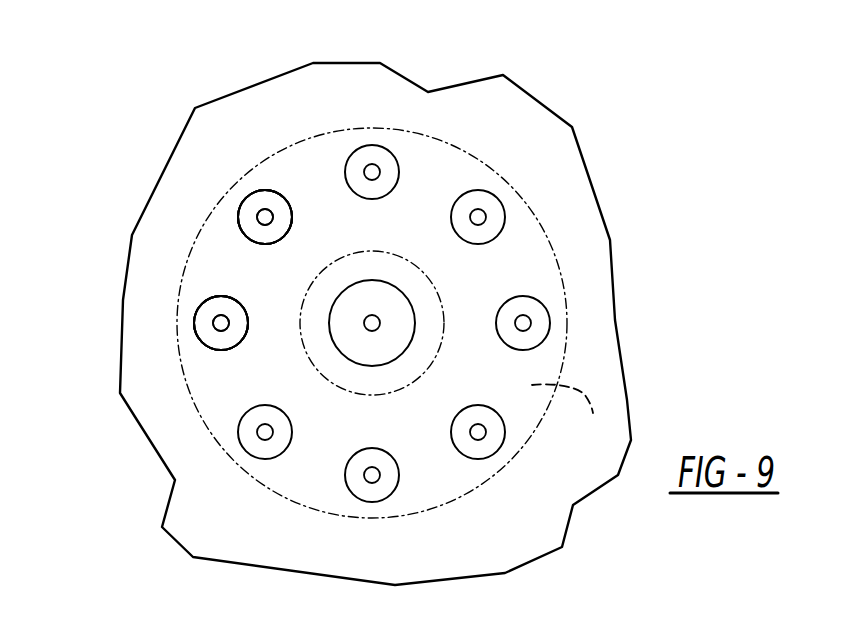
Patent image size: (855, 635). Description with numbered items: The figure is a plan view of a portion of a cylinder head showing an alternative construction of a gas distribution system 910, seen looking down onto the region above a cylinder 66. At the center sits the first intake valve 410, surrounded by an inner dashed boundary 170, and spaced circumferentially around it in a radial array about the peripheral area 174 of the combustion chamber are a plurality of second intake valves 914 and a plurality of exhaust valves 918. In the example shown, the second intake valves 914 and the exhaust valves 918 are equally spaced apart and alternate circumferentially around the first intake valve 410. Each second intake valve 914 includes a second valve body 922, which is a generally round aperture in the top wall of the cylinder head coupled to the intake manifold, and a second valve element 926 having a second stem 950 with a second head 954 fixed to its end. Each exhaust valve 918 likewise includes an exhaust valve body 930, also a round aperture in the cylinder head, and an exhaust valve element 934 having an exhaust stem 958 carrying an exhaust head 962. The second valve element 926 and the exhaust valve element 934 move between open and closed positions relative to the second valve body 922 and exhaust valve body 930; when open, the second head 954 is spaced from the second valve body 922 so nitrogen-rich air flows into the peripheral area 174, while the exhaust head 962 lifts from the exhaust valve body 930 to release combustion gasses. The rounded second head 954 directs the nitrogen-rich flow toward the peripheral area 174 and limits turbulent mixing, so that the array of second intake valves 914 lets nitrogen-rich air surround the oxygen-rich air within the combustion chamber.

The gas distribution system 910 is at (317, 157).
The cylinder 66 is at (460, 498).
The first intake valve 410 is at (403, 298).
The hub pilot circle 170 is at (417, 353).
The peripheral area 174 is at (573, 413).
The exhaust valves 918 is at (391, 157).
The second intake valves 914 is at (456, 230).
The second valve body 922 is at (258, 191).
The second head 954 is at (253, 205).
The second stem 950 is at (257, 218).
The second valve element 926 is at (262, 233).
The exhaust head 962 is at (233, 311).
The exhaust stem 958 is at (228, 324).
The exhaust valve body 930 is at (200, 346).
The exhaust valve element 934 is at (219, 343).